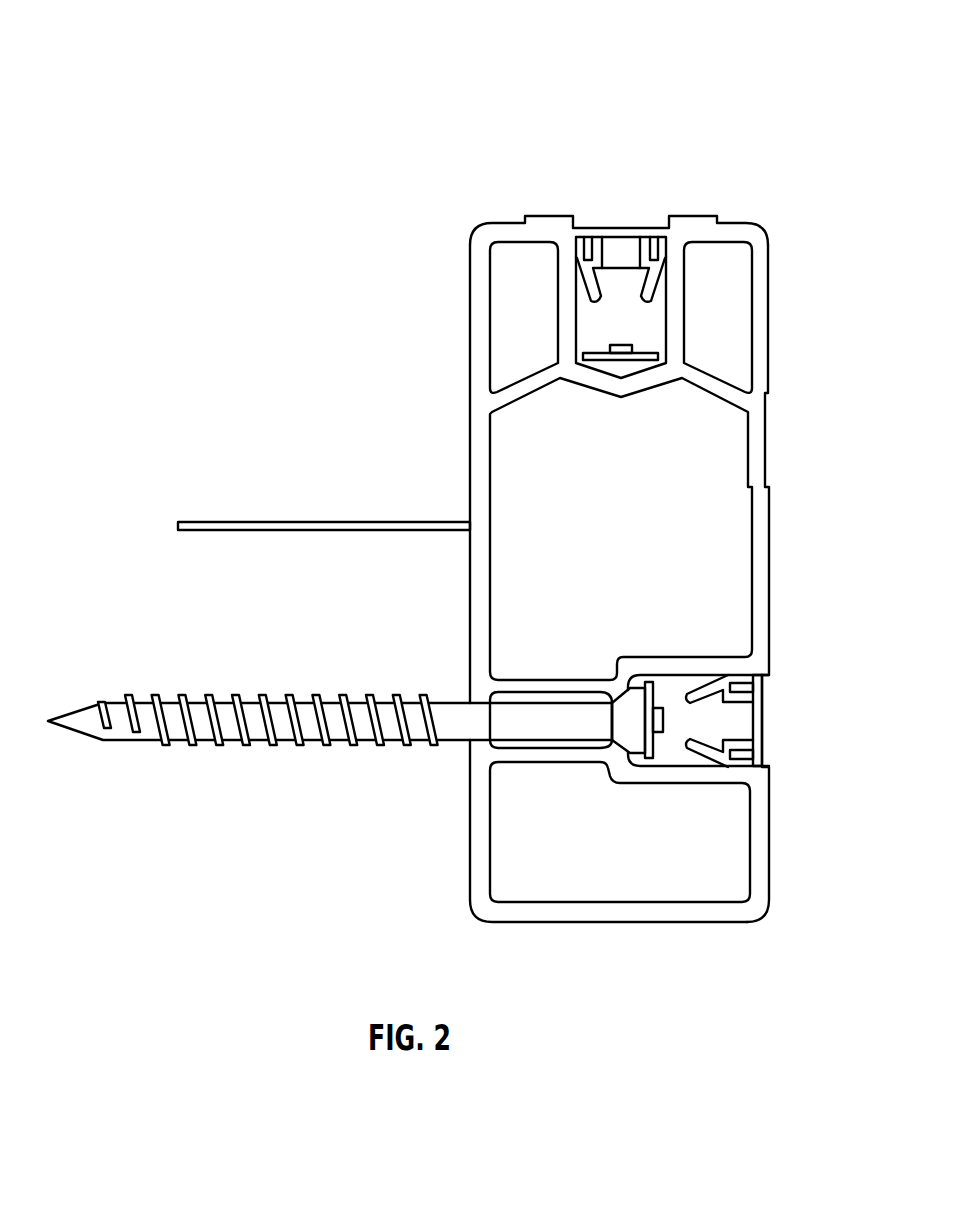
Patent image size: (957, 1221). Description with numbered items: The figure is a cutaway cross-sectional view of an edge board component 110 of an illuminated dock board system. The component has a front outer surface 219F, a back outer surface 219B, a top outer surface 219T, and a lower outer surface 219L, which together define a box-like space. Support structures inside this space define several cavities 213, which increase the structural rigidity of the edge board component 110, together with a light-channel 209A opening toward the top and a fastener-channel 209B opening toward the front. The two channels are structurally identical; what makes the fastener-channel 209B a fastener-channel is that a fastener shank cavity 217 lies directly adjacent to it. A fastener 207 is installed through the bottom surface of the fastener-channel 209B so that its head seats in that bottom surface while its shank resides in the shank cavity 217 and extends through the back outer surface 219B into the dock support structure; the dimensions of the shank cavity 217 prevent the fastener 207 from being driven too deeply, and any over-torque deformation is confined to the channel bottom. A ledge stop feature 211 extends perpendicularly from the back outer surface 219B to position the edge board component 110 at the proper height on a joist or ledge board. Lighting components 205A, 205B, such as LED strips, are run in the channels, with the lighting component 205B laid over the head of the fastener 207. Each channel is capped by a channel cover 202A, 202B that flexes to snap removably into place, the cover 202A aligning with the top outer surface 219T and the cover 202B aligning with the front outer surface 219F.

The edge board component 110 is at (617, 513).
The top outer surface 219T is at (619, 193).
The front outer surface 219F is at (808, 583).
The back outer surface 219B is at (417, 572).
The lower outer surface 219L is at (622, 932).
The channel cover 202A is at (635, 267).
The light-channel 209A is at (611, 232).
The lighting component 205A is at (713, 326).
The cavities 213 is at (620, 604).
The fastener shank cavity 217 is at (551, 758).
The channel cover 202B is at (748, 730).
The fastener-channel 209B is at (706, 758).
The lighting component 205B is at (745, 720).
The fastener 207 is at (346, 748).
The ledge stop feature 211 is at (324, 506).